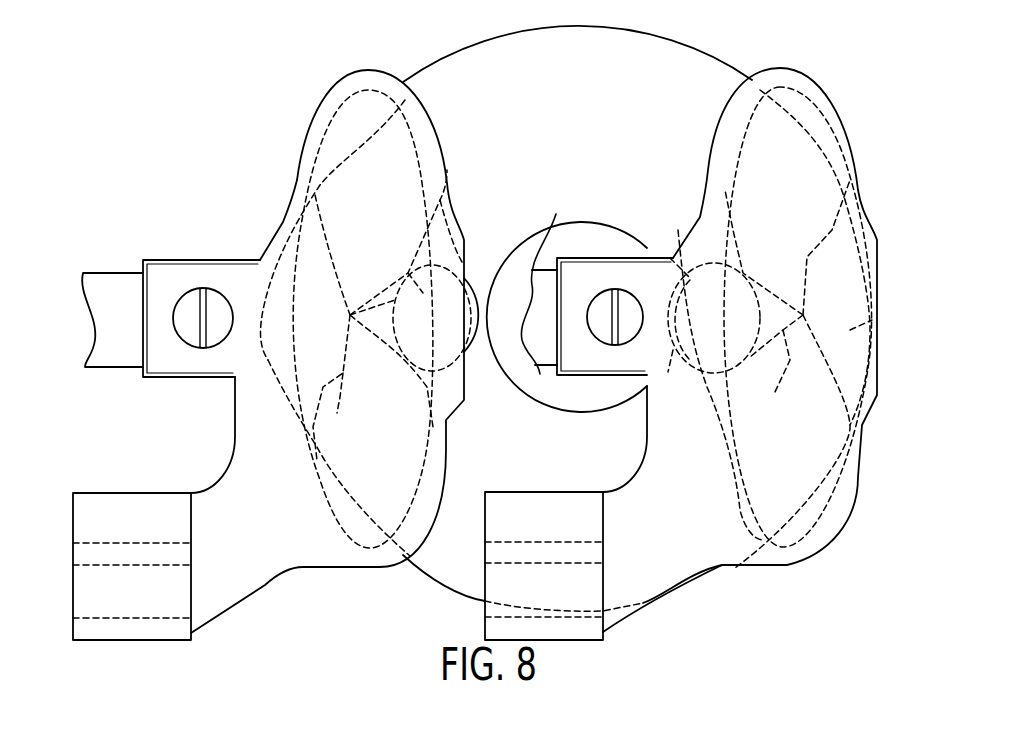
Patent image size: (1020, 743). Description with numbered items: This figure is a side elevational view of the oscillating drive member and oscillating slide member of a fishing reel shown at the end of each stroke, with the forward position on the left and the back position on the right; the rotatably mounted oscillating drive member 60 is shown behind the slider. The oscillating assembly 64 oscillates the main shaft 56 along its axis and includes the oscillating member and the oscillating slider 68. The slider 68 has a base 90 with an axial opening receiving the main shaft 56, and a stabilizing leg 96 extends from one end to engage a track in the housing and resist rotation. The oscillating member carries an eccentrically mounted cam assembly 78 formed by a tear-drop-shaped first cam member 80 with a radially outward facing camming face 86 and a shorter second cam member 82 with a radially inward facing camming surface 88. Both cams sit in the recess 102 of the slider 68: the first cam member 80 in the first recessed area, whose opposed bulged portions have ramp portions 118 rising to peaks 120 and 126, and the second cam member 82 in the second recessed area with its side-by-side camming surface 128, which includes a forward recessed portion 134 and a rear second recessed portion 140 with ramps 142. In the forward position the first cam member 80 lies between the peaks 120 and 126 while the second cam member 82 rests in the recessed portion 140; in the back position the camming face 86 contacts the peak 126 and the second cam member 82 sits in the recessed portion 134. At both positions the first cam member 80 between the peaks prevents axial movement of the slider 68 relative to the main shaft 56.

The main shaft 56 is at (112, 272).
The disc 60 is at (668, 36).
The oscillating assembly 64 is at (874, 176).
The oscillating slider 68 is at (374, 68).
The cam assembly 78 is at (472, 282).
The first cam member 80 is at (368, 286).
The second cam member 82 is at (418, 290).
The camming face 86 is at (347, 313).
The camming surface 88 is at (478, 347).
The base 90 is at (188, 262).
The stabilizing leg 96 is at (130, 493).
The recess 102 is at (394, 139).
The ramp portions 118 is at (348, 405).
The peak 120 is at (348, 360).
The peak 126 is at (792, 282).
The camming surface 128 is at (283, 355).
The recessed portion 134 is at (307, 263).
The second recessed portion 140 is at (455, 225).
The ramps 142 is at (455, 418).